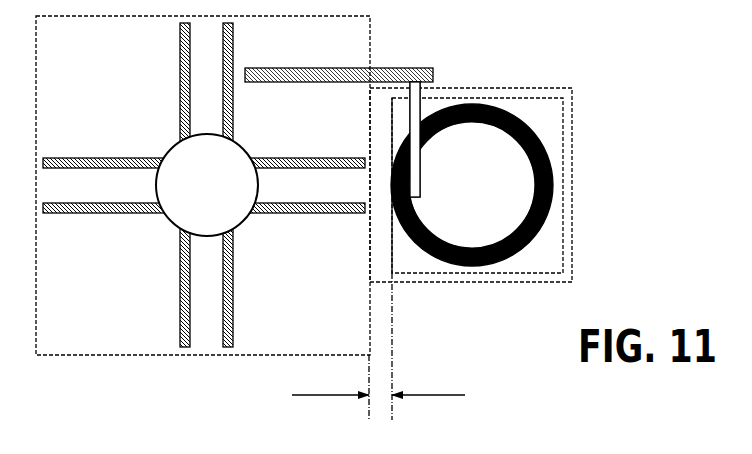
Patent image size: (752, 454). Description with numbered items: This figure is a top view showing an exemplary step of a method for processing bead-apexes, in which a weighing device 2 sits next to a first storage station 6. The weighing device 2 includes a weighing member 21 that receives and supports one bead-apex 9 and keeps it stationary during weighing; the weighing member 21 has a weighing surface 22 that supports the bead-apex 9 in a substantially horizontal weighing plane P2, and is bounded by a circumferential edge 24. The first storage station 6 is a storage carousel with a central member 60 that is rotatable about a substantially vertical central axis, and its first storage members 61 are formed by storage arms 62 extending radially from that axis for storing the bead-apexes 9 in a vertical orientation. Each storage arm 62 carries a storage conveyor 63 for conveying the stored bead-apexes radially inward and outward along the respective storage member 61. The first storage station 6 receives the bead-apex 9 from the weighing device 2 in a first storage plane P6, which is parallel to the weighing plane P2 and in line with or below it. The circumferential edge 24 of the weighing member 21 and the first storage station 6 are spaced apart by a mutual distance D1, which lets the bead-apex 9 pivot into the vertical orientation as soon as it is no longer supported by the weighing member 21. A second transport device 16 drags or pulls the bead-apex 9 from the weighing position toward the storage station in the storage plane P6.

The weighing device 2 is at (465, 212).
The first storage station 6 is at (203, 216).
The bead-apex 9 is at (507, 113).
The second transport device 16 is at (405, 68).
The weighing member 21 is at (553, 115).
The weighing surface 22 is at (553, 253).
The circumferential edge 24 is at (392, 216).
The central member 60 is at (178, 160).
The first storage member 61 is at (273, 170).
The storage arm 62 is at (204, 185).
The storage conveyor 63 is at (313, 170).
The weighing plane P2 is at (511, 157).
The first storage plane P6 is at (72, 357).
The mutual distance D1 is at (378, 361).